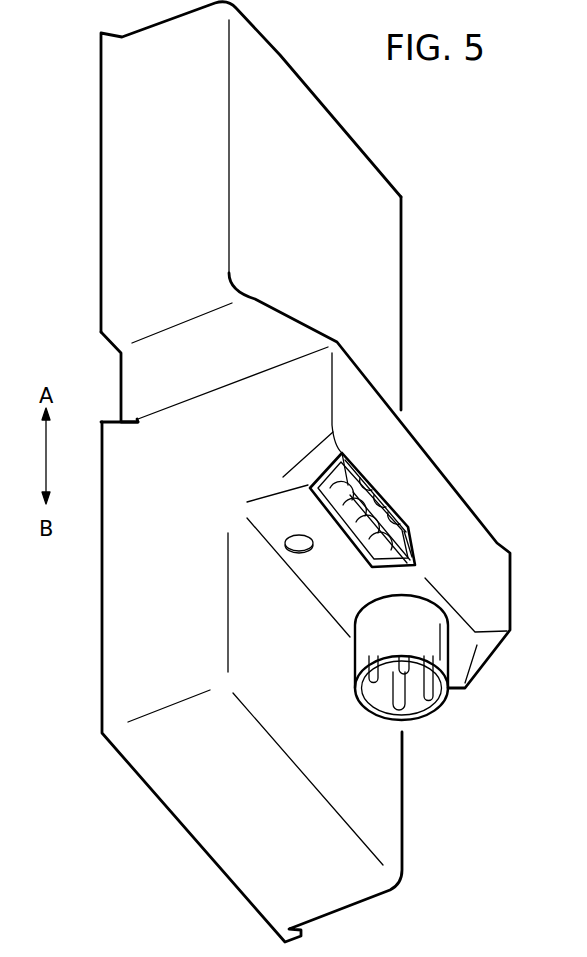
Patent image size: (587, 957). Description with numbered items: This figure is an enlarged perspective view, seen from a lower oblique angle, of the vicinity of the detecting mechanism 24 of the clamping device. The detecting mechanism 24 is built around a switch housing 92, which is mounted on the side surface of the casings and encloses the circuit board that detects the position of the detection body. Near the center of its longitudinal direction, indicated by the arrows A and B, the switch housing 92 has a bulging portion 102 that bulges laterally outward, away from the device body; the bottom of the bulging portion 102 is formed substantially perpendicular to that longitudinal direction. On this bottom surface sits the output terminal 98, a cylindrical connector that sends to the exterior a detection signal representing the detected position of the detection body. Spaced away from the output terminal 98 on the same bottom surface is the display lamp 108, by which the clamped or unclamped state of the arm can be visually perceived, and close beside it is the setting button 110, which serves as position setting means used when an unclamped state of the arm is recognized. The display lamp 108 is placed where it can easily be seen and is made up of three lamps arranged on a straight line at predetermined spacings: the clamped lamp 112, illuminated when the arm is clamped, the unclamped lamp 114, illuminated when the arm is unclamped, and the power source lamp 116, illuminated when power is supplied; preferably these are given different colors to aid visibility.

The detecting mechanism 24 is at (413, 270).
The switch housing 92 is at (118, 172).
The output terminal 98 is at (408, 708).
The bulging portion 102 is at (493, 540).
The display lamp 108 is at (397, 510).
The setting button 110 is at (298, 553).
The clamped lamp 112 is at (414, 546).
The unclamped lamp 114 is at (370, 478).
The power source lamp 116 is at (358, 537).